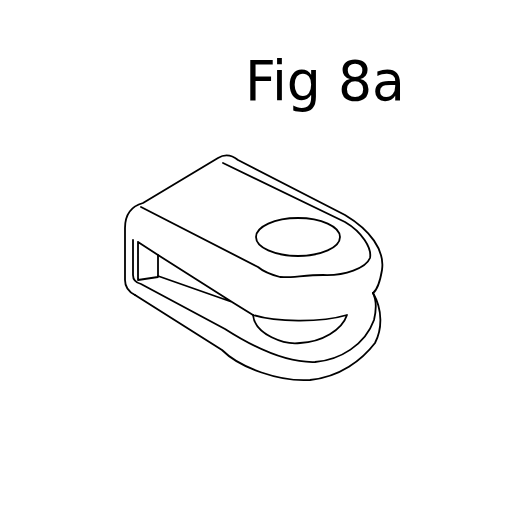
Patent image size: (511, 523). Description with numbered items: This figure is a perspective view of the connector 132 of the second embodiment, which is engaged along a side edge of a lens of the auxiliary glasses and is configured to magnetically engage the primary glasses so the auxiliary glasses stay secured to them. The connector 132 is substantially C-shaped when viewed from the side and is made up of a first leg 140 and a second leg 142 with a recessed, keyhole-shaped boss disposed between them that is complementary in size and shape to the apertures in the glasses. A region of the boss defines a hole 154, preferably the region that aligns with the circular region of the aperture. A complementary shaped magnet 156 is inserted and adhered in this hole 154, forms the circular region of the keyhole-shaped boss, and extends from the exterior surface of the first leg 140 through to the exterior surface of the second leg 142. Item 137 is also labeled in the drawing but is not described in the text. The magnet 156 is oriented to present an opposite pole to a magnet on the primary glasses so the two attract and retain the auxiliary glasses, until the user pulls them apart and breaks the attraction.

The connector 132 is at (394, 195).
The slot 137 is at (143, 263).
The first leg 140 is at (192, 241).
The second leg 142 is at (222, 350).
The hole 154 is at (287, 258).
The magnet 156 is at (327, 247).